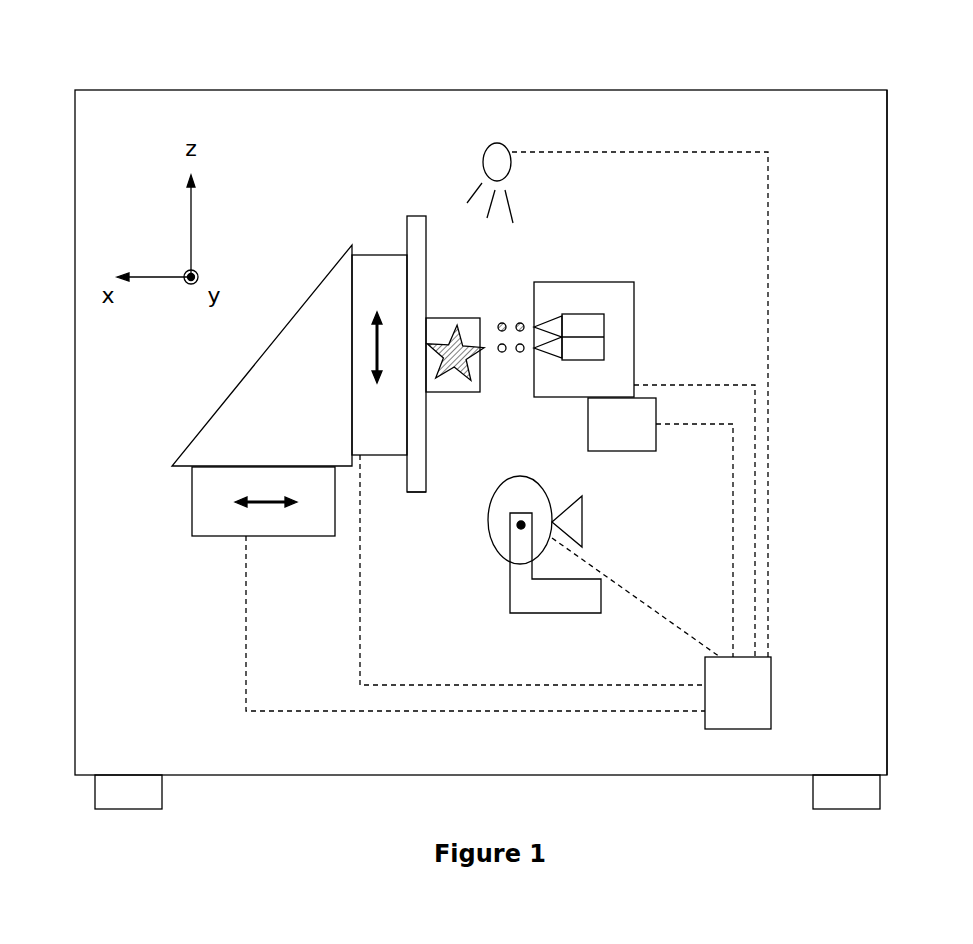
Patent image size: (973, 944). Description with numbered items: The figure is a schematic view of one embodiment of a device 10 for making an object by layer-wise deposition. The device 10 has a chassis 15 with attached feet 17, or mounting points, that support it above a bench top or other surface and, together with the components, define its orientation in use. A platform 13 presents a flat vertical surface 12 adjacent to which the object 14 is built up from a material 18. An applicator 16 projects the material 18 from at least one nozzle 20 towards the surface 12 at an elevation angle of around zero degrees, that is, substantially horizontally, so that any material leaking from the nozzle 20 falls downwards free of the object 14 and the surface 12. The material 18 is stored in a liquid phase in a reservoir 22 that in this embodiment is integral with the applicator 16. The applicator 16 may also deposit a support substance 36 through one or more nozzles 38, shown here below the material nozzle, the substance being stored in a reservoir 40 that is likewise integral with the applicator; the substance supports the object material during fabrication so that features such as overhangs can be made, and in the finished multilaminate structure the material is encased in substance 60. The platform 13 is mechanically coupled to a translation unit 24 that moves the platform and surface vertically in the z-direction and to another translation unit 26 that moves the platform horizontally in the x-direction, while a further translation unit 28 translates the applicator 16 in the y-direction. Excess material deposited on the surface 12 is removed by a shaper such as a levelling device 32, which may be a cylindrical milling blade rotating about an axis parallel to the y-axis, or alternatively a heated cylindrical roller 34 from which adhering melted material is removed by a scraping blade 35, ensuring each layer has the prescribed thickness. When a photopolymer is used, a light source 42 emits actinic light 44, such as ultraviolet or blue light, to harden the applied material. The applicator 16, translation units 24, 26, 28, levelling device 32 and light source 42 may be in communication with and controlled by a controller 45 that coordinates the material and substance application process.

The device 10 is at (900, 127).
The vertical surface 12 is at (426, 238).
The platform 13 is at (418, 477).
The object 14 is at (457, 327).
The chassis 15 is at (887, 365).
The applicator 16 is at (634, 282).
The feet 17 is at (162, 782).
The material 18 is at (503, 322).
The nozzle 20 is at (545, 325).
The reservoir 22 is at (604, 327).
The translation unit 24 is at (382, 288).
The translation unit 26 is at (203, 493).
The translation unit 28 is at (642, 413).
The levelling device 32 is at (584, 620).
The heated cylindrical roller 34 is at (490, 547).
The scraping blade 35 is at (582, 535).
The substance 36 is at (520, 355).
The nozzle 38 is at (557, 368).
The reservoir 40 is at (604, 351).
The light source 42 is at (512, 152).
The actinic light 44 is at (482, 190).
The controller 45 is at (772, 680).
The substance 60 is at (446, 393).